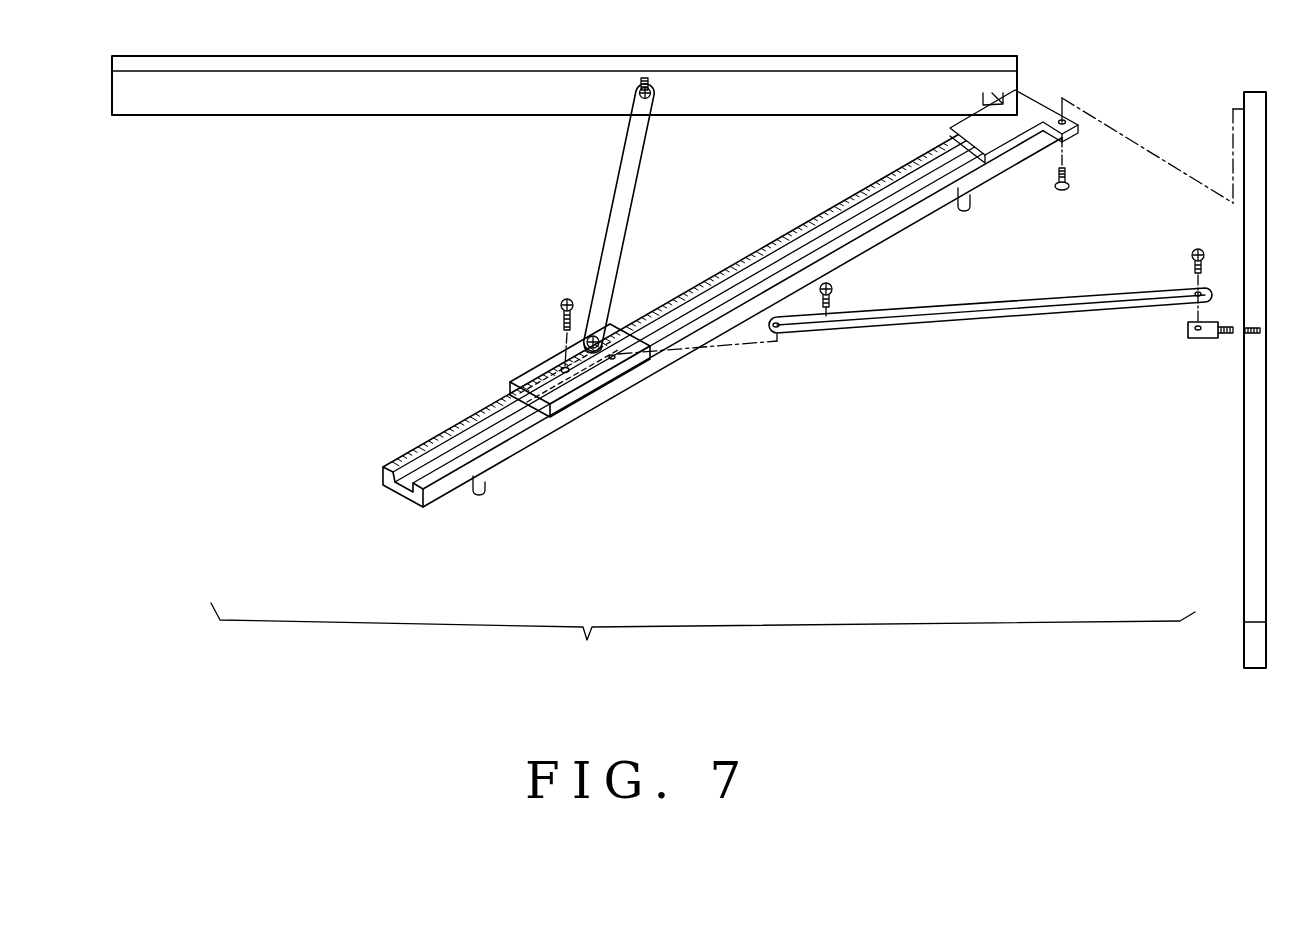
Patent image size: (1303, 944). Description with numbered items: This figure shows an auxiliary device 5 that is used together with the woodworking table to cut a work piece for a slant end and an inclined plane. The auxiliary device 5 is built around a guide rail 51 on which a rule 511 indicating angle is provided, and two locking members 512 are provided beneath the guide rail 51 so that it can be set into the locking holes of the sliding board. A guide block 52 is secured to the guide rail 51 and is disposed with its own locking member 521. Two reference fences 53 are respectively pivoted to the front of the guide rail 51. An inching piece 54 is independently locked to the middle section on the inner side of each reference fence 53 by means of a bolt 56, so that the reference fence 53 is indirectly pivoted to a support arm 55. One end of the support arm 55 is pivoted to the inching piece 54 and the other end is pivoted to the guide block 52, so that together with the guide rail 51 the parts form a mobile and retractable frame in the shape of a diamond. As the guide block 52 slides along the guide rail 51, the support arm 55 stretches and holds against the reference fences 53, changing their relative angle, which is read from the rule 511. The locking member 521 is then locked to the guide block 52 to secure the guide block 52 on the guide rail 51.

The auxiliary device 5 is at (703, 640).
The guide rail 51 is at (730, 329).
The rule 511 is at (752, 256).
The locking members 512 is at (480, 496).
The guide block 52 is at (630, 389).
The locking member 521 is at (562, 315).
The reference fences 53 is at (350, 98).
The inching piece 54 is at (1190, 338).
The support arm 55 is at (618, 215).
The bolt 56 is at (1058, 192).